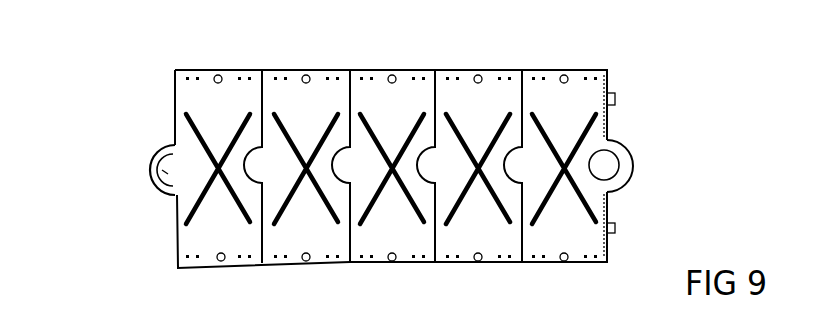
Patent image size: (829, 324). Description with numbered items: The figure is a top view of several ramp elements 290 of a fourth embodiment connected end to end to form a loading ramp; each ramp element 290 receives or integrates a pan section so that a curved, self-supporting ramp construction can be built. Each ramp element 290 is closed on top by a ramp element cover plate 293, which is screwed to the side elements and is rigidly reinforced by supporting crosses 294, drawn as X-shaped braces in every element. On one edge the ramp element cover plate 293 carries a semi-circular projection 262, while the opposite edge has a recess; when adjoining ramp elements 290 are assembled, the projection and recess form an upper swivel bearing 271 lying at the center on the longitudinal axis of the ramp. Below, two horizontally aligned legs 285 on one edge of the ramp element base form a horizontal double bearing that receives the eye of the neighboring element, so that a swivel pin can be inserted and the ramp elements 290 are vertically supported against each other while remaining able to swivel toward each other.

The upper swivel bearing 271 is at (118, 139).
The legs 285 is at (158, 146).
The semi-circular projection 262 is at (158, 192).
The ramp element 290 is at (371, 68).
The ramp element cover plate 293 is at (204, 77).
The supporting crosses 294 is at (391, 219).